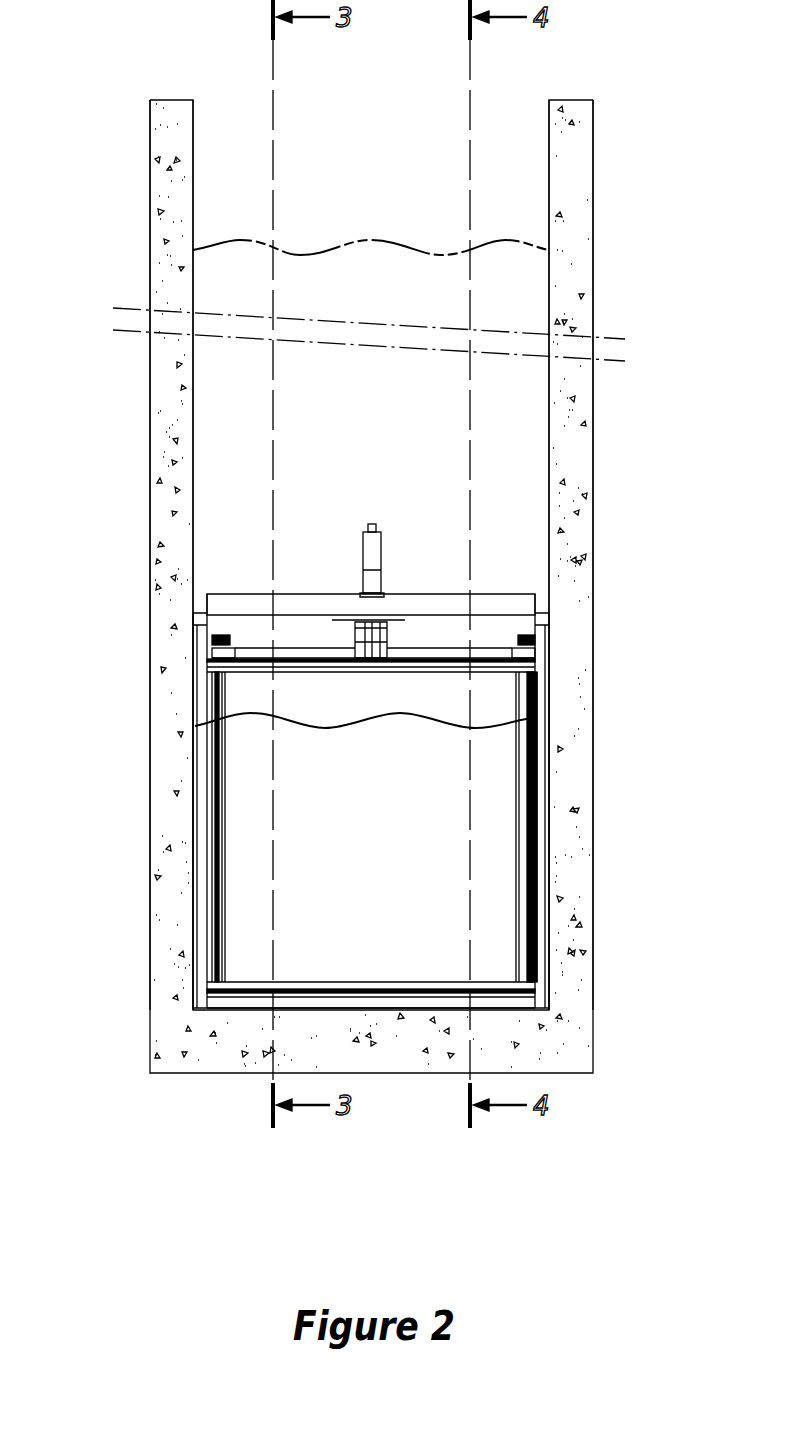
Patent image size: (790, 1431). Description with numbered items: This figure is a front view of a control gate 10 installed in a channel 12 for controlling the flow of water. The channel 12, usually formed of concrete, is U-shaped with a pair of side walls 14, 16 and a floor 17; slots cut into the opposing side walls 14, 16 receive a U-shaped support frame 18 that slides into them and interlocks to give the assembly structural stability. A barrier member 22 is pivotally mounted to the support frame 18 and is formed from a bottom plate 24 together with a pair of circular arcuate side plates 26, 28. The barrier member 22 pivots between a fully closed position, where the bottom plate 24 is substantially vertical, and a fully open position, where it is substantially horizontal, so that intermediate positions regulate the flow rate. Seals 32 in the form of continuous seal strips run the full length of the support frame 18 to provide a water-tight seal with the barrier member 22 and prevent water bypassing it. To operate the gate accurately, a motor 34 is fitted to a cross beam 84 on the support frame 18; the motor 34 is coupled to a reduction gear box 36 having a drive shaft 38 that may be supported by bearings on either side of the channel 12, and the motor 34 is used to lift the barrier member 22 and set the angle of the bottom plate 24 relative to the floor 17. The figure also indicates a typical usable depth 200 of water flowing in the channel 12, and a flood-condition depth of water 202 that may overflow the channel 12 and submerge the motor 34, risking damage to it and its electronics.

The control gate 10 is at (300, 538).
The channel 12 is at (570, 457).
The side wall 14 is at (170, 460).
The side wall 16 is at (593, 830).
The floor 17 is at (372, 1008).
The support frame 18 is at (540, 800).
The barrier member 22 is at (262, 828).
The bottom plate 24 is at (382, 858).
The side plate 26 is at (232, 912).
The side plate 28 is at (515, 912).
The seal 32 is at (535, 765).
The motor 34 is at (382, 551).
The reduction gear box 36 is at (365, 648).
The drive shaft 38 is at (473, 648).
The cross beam 84 is at (513, 605).
The usable depth 200 is at (367, 722).
The depth of water 202 is at (368, 242).